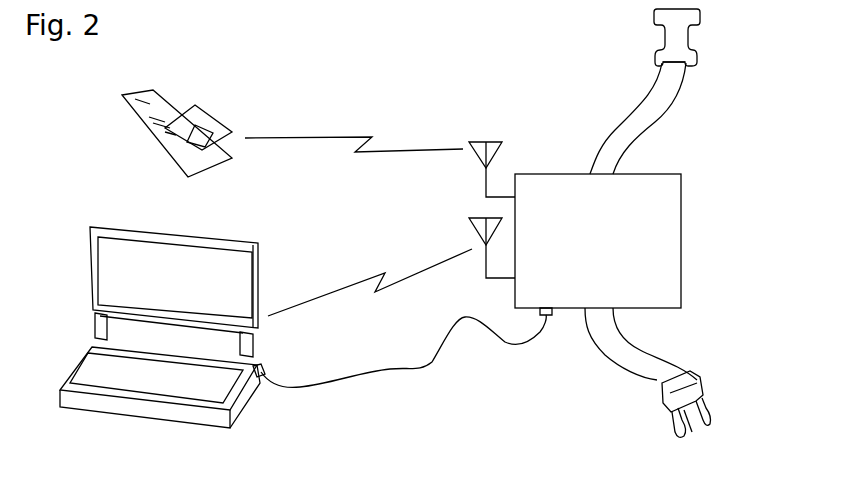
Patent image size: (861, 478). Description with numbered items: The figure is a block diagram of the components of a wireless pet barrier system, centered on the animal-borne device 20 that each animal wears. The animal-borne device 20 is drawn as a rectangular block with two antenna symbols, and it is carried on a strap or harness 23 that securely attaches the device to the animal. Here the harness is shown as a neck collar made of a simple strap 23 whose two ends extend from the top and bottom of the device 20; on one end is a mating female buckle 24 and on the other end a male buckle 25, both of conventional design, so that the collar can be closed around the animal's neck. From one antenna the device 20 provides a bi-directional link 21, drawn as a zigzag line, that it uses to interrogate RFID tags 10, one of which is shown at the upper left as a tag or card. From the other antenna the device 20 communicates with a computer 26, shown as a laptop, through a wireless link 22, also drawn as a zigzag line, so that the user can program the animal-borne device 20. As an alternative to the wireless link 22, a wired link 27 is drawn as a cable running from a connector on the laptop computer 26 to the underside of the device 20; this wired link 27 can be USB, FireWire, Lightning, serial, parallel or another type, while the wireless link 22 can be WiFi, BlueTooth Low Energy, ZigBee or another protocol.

The RFID tags 10 is at (127, 115).
The animal-borne device 20 is at (598, 244).
The bi-directional link 21 is at (422, 140).
The wireless link 22 is at (422, 271).
The strap 23 is at (655, 107).
The female buckle 24 is at (680, 35).
The male buckle 25 is at (702, 400).
The computer 26 is at (95, 290).
The wired link 27 is at (382, 370).